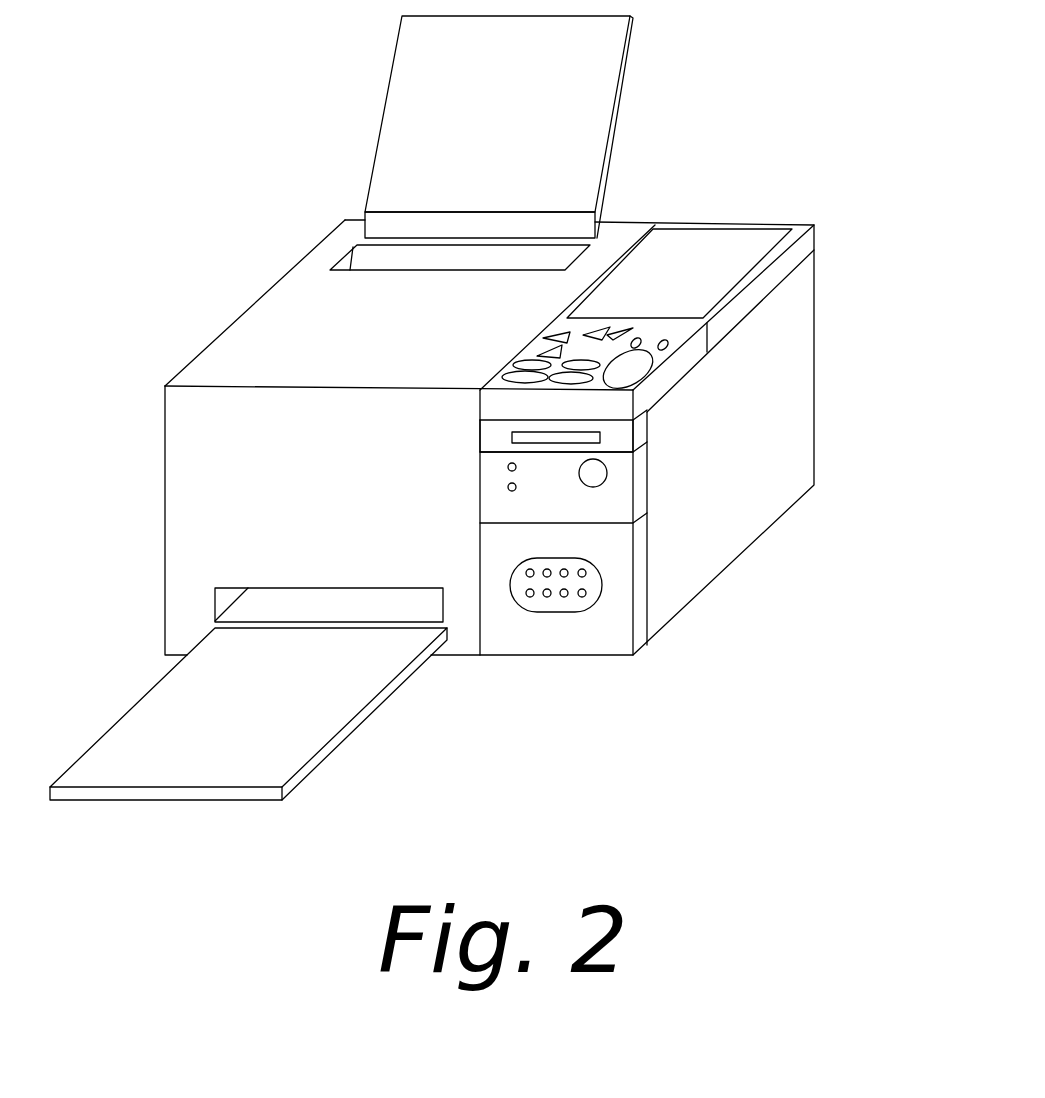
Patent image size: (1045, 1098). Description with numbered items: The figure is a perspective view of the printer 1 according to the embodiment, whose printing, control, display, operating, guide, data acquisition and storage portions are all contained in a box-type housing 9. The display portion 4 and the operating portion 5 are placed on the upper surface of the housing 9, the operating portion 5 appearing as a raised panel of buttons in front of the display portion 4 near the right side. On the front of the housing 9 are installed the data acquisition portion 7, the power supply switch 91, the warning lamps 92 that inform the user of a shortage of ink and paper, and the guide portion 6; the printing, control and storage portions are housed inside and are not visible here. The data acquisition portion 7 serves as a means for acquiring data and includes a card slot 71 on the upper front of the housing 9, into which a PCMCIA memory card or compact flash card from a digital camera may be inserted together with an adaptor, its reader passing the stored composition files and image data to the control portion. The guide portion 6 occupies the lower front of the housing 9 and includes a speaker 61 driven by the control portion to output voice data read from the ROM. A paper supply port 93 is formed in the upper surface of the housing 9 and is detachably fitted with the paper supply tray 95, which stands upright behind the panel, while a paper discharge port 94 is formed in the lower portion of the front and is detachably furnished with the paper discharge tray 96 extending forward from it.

The printer 1 is at (750, 213).
The housing 9 is at (248, 298).
The paper supply tray 95 is at (385, 87).
The paper supply port 93 is at (345, 257).
The operating portion 5 is at (680, 362).
The display portion 4 is at (800, 247).
The guide portion 6 is at (535, 647).
The data acquisition portion 7 is at (643, 428).
The card slot 71 is at (600, 437).
The warning lamps 92 is at (516, 467).
The power supply switch 91 is at (607, 478).
The speaker 61 is at (578, 603).
The paper discharge port 94 is at (215, 590).
The paper discharge tray 96 is at (368, 717).